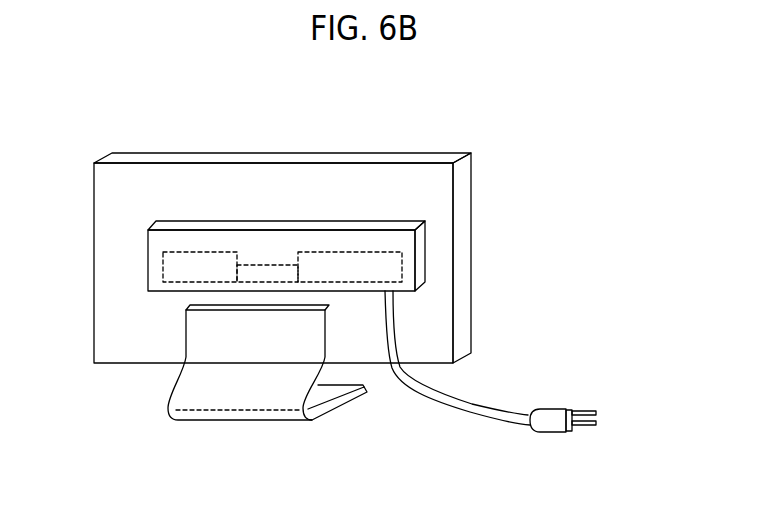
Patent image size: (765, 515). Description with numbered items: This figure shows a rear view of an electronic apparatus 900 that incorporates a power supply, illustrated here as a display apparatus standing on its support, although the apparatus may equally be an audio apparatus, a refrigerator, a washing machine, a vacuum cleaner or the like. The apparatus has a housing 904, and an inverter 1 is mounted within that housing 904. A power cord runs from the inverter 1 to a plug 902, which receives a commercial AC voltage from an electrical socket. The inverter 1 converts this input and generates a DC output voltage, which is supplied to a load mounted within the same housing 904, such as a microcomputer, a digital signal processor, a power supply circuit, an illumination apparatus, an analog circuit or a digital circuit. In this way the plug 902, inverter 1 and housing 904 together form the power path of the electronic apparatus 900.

The electronic apparatus 900 is at (499, 167).
The housing 904 is at (342, 179).
The inverter 1 is at (385, 269).
The plug 902 is at (548, 430).